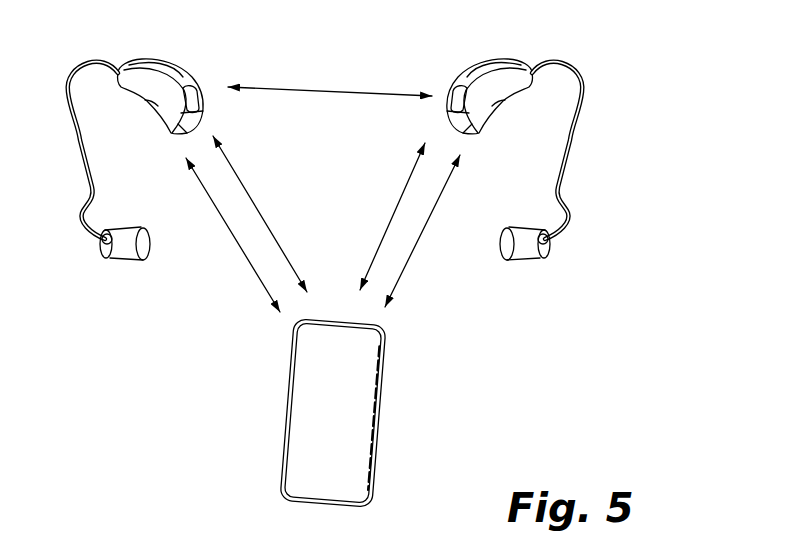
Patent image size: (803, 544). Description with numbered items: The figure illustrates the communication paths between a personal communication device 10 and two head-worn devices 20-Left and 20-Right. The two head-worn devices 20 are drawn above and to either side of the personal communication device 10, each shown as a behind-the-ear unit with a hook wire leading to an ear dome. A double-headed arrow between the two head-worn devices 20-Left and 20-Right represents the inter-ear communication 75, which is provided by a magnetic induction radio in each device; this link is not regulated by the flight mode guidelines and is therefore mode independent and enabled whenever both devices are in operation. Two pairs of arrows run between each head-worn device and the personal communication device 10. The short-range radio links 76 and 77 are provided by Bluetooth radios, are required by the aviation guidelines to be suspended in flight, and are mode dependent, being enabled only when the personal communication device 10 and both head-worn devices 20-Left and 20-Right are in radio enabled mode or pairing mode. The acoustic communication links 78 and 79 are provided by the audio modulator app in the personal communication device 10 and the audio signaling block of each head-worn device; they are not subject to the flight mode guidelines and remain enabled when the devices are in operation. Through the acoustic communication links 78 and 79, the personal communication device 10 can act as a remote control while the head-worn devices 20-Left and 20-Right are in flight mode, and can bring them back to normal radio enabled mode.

The head-worn device 20-Left is at (128, 45).
The head-worn device 20-Right is at (492, 58).
The head-worn devices 20 is at (372, 130).
The inter-ear communication 75 is at (320, 85).
The short-range radio link 77 is at (225, 227).
The acoustic communication link 79 is at (267, 230).
The acoustic communication link 78 is at (395, 225).
The short-range radio link 76 is at (400, 277).
The personal communication device 10 is at (383, 447).